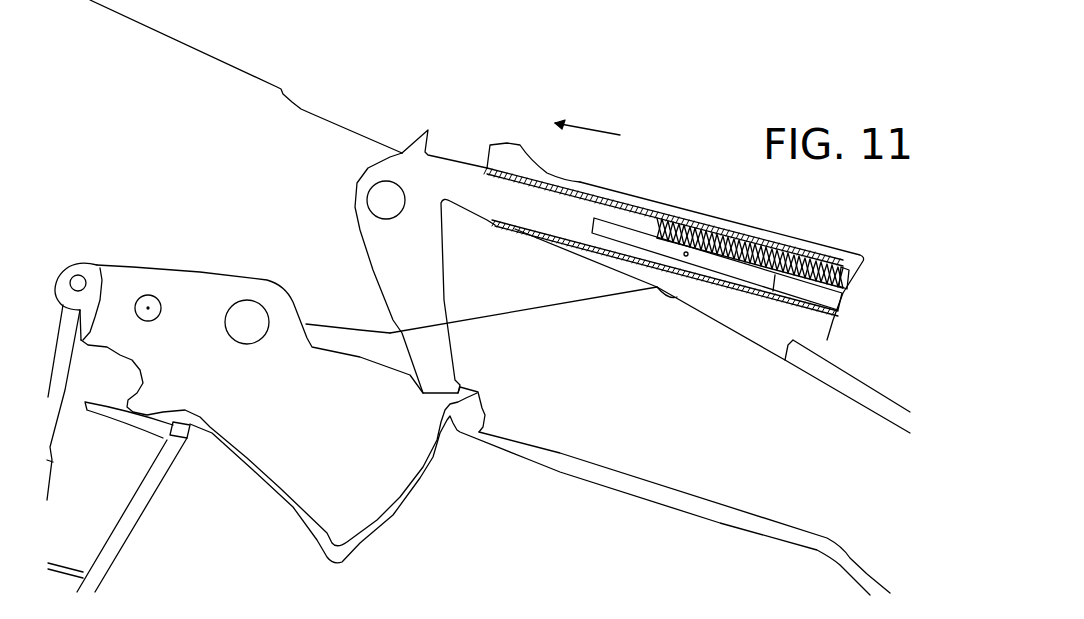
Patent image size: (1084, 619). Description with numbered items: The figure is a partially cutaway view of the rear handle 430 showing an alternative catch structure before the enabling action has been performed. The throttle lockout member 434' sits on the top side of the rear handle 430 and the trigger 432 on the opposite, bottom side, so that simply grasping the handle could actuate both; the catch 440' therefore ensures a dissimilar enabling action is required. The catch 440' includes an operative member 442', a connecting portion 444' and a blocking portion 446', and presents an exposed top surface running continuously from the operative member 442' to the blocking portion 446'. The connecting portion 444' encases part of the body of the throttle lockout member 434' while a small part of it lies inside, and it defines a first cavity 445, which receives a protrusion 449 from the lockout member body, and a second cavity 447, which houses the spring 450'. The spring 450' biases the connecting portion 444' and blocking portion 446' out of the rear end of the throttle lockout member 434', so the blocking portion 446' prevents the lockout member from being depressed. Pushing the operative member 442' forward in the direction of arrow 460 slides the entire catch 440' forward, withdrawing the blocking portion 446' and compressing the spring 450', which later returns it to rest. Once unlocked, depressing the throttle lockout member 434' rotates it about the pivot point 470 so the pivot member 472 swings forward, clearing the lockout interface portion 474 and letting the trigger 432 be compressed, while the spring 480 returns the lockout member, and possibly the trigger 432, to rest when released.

The rear handle 430 is at (180, 52).
The trigger 432 is at (377, 498).
The throttle lockout member 434' is at (650, 255).
The catch 440' is at (727, 261).
The operative member 442' is at (537, 156).
The connecting portion 444' is at (663, 212).
The first cavity 445 is at (817, 292).
The blocking portion 446' is at (850, 379).
The second cavity 447 is at (822, 252).
The protrusion 449 is at (686, 255).
The spring 450' is at (751, 240).
The arrow 460 is at (592, 125).
The pivot point 470 is at (373, 197).
The pivot member 472 is at (433, 287).
The lockout interface portion 474 is at (457, 403).
The spring 480 is at (521, 311).